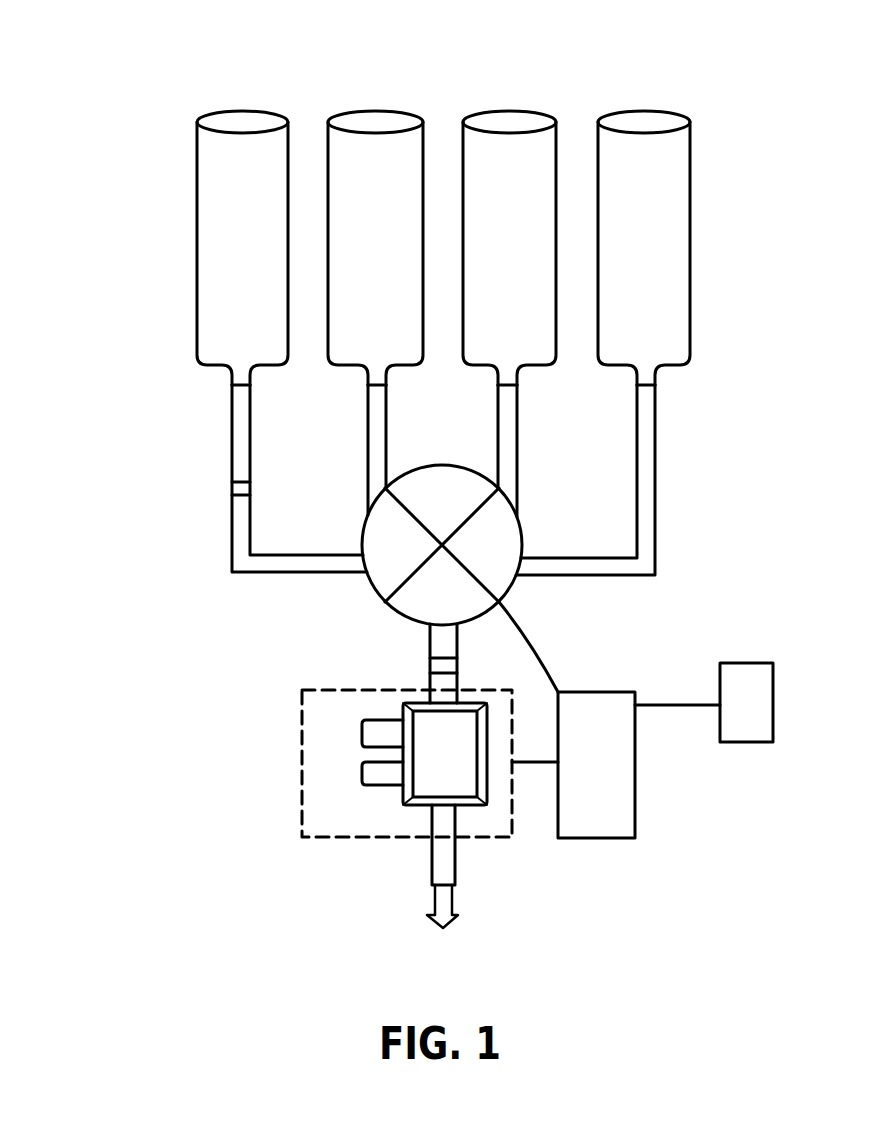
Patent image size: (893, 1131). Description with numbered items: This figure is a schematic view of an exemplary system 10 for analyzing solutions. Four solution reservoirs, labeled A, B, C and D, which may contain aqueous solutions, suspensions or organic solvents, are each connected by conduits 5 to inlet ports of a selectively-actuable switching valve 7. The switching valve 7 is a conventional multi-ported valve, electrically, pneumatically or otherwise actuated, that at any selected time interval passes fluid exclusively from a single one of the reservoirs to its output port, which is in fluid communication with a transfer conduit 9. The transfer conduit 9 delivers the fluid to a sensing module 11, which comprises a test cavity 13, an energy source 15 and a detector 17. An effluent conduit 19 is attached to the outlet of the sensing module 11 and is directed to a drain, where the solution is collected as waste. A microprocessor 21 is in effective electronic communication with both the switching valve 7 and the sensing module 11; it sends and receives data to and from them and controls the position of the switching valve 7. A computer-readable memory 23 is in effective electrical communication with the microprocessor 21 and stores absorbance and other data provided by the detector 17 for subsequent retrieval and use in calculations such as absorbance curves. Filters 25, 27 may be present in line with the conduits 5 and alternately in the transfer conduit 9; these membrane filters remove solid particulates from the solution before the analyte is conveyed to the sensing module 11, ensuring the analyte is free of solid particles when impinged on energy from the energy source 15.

The conduits 5 is at (380, 425).
The switching valve 7 is at (395, 572).
The transfer conduit 9 is at (442, 640).
The system 10 is at (137, 147).
The sensing module 11 is at (300, 827).
The test cavity 13 is at (433, 770).
The energy source 15 is at (373, 735).
The detector 17 is at (373, 773).
The effluent conduit 19 is at (445, 867).
The microprocessor 21 is at (635, 797).
The computer-readable memory 23 is at (745, 690).
The filter 25 is at (440, 664).
The filter 27 is at (237, 487).